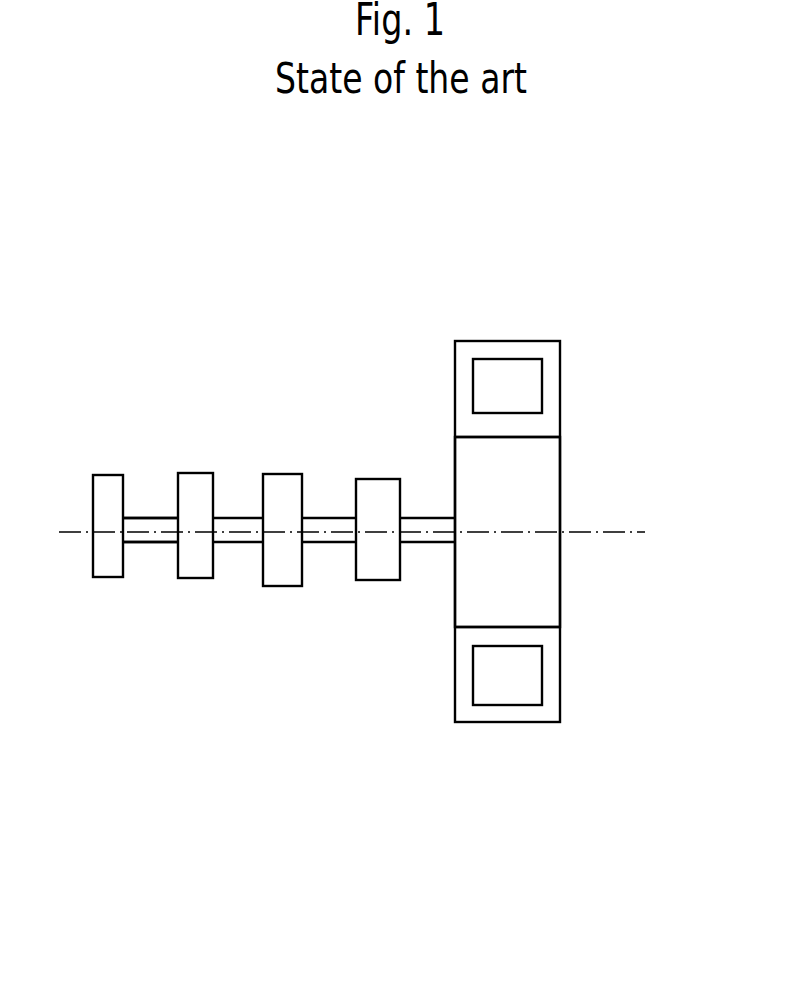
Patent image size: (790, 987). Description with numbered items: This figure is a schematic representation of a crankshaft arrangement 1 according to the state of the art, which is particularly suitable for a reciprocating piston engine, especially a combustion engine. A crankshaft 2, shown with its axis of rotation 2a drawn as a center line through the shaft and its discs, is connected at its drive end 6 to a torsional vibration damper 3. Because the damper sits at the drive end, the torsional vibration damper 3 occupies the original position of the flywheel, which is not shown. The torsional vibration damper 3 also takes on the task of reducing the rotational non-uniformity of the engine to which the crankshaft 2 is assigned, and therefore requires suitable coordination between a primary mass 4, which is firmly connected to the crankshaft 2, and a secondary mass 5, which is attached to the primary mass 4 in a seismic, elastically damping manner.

The crankshaft arrangement 1 is at (222, 701).
The crankshaft 2 is at (241, 517).
The axis of rotation 2a is at (145, 543).
The torsional vibration damper 3 is at (554, 466).
The primary mass 4 is at (533, 582).
The secondary mass 5 is at (523, 680).
The drive end 6 is at (590, 517).